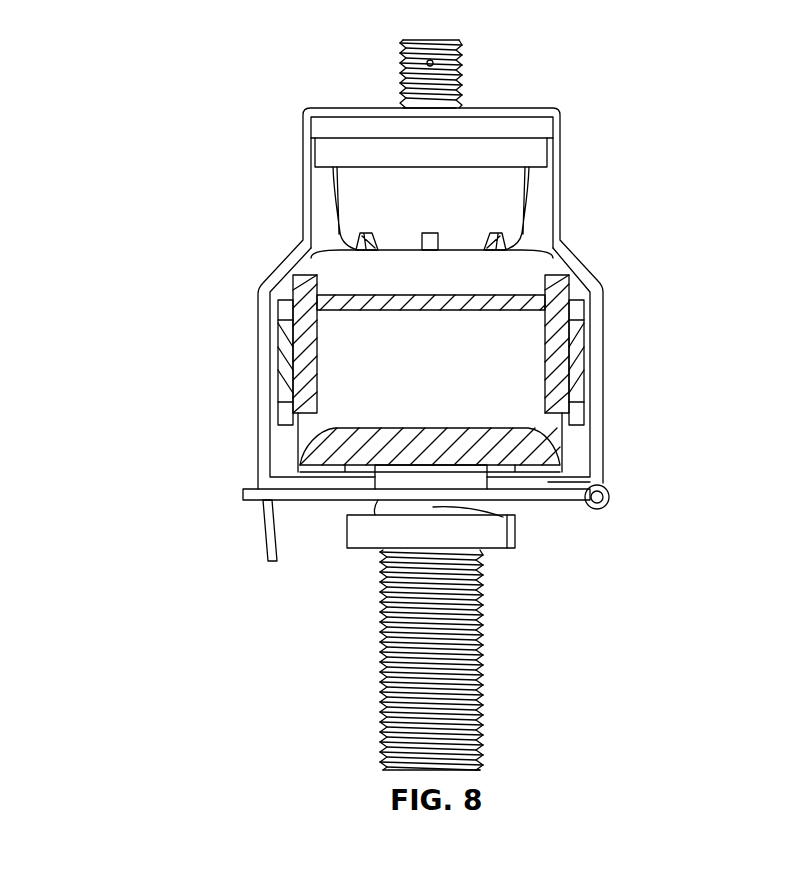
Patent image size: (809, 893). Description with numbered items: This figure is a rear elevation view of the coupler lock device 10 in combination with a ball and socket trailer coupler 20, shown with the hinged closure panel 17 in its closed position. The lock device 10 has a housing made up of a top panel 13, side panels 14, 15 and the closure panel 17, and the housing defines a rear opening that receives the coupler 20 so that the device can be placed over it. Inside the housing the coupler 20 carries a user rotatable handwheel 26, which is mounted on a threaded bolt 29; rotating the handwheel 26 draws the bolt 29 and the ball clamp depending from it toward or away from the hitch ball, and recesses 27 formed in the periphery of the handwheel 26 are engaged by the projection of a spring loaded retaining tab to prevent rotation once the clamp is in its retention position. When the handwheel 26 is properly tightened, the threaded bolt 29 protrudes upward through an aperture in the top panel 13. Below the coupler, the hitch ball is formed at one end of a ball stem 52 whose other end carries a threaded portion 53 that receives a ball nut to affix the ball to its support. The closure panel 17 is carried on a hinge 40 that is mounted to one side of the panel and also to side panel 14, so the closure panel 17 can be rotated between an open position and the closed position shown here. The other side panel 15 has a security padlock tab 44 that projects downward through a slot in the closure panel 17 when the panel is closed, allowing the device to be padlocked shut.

The coupler lock device 10 is at (691, 314).
The top panel 13 is at (333, 107).
The side panel 14 is at (560, 197).
The side panel 15 is at (305, 195).
The hinged closure panel 17 is at (255, 496).
The coupler 20 is at (446, 362).
The handwheel 26 is at (523, 153).
The recesses 27 is at (360, 237).
The threaded bolt 29 is at (463, 88).
The hinge 40 is at (608, 486).
The security padlock tab 44 is at (267, 543).
The ball stem 52 is at (490, 500).
The threaded portion 53 is at (380, 656).